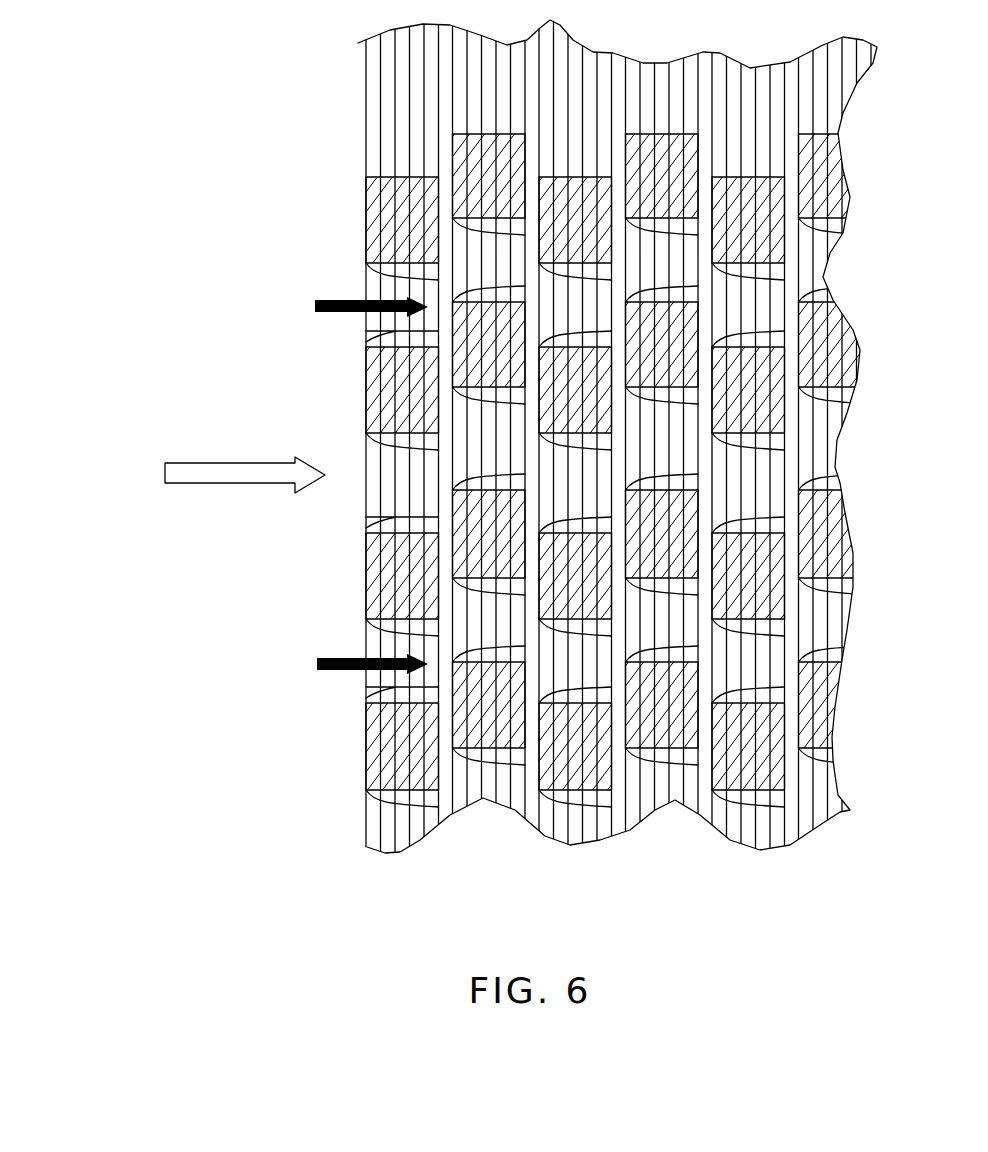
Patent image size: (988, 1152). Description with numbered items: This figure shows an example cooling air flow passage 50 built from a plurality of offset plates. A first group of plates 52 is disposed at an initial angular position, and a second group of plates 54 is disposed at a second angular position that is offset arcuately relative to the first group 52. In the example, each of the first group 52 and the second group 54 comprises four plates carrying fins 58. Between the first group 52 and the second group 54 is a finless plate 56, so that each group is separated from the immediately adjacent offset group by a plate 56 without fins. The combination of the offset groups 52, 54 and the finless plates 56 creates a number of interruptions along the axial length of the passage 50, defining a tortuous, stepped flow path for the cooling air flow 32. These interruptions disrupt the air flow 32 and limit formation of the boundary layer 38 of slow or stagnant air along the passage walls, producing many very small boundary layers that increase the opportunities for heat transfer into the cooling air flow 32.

The air flow passage 50 is at (220, 212).
The first group of plates 52 is at (366, 207).
The second group of plates 54 is at (525, 140).
The finless plate 56 is at (447, 172).
The fins 58 is at (407, 777).
The boundary layer 38 is at (366, 287).
The cooling air flow 32 is at (315, 307).